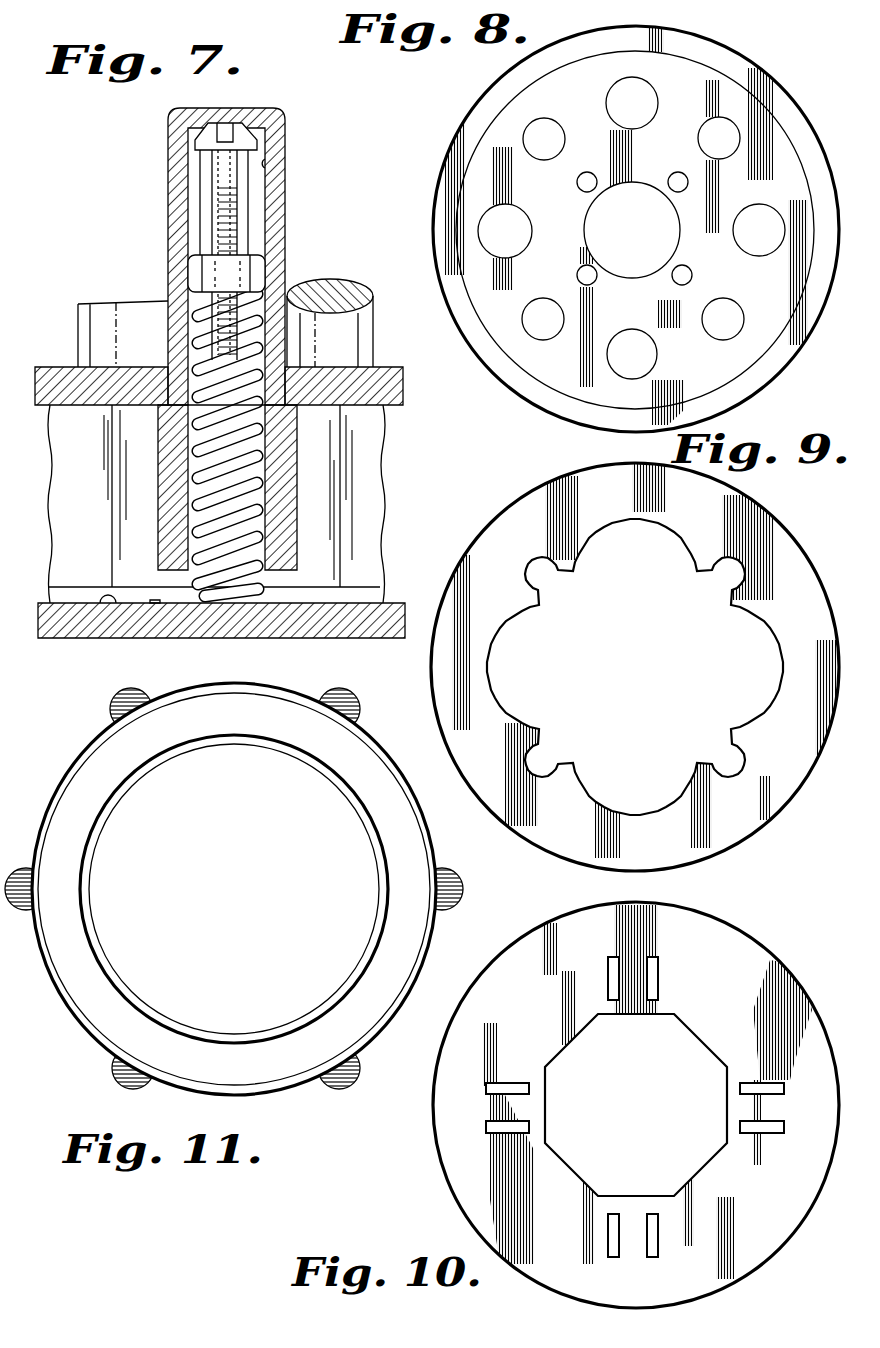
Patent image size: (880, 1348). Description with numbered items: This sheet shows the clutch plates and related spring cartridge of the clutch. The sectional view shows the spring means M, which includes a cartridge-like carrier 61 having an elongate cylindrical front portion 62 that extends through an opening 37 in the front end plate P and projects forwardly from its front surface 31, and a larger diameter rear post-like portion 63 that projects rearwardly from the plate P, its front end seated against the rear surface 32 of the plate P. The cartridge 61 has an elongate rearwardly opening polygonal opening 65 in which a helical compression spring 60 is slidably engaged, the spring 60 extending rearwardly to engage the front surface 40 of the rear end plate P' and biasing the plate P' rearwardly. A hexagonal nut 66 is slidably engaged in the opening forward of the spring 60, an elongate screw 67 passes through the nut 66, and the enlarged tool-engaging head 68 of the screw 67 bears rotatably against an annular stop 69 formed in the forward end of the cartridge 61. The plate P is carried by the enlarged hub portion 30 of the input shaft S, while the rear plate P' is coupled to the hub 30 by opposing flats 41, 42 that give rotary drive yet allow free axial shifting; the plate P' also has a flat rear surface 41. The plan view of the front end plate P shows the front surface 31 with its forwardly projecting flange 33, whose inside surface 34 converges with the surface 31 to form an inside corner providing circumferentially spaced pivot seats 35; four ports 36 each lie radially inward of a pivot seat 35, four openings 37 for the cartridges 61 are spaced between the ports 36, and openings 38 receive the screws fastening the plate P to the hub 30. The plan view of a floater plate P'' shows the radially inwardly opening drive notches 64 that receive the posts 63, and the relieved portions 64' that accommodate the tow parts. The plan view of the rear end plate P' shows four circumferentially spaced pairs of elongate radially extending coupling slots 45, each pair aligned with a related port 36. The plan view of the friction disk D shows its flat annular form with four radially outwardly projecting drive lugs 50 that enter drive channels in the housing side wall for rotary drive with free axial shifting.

In FIG. 7, the hub portion 30 is at (365, 455).
In FIG. 7, the front surface 31 is at (385, 366).
In FIG. 8, the front surface 31 is at (680, 82).
In FIG. 7, the rear surface 32 is at (372, 416).
In FIG. 8, the flange 33 is at (468, 128).
In FIG. 8, the inside surface 34 is at (475, 165).
In FIG. 8, the pivot seats 35 is at (470, 198).
In FIG. 8, the ports 36 is at (617, 97).
In FIG. 8, the openings 37 is at (542, 121).
In FIG. 8, the openings 38 is at (582, 180).
In FIG. 7, the front surface 40 is at (98, 640).
In FIG. 10, the front surface 40 is at (441, 1163).
In FIG. 7, the rear surface / inner flats 41 is at (155, 640).
In FIG. 10, the rear surface / inner flats 41 is at (636, 1197).
In FIG. 7, the flats 42 is at (370, 483).
In FIG. 10, the coupling slots 45 is at (530, 1092).
In FIG. 11, the drive lugs 50 is at (139, 1088).
In FIG. 7, the helical compression springs 60 is at (225, 640).
In FIG. 7, the cartridge-like carriers 61 is at (170, 190).
In FIG. 7, the front portions 62 is at (167, 215).
In FIG. 7, the rear post-like portions 63 is at (157, 463).
In FIG. 9, the drive notches 64 is at (635, 667).
In FIG. 9, the relief 64' is at (719, 643).
In FIG. 7, the polygonal openings 65 is at (264, 164).
In FIG. 7, the nut 66 is at (262, 268).
In FIG. 7, the screw 67 is at (233, 205).
In FIG. 7, the tool-engaging head 68 is at (244, 143).
In FIG. 7, the annular stops 69 is at (207, 124).
In FIG. 7, the spring means M is at (165, 127).
In FIG. 7, the front end plate P is at (425, 391).
In FIG. 8, the front end plate P is at (630, 229).
In FIG. 7, the rear end plate P' is at (216, 641).
In FIG. 10, the rear end plate P' is at (605, 1105).
In FIG. 9, the floater plates P'' is at (635, 667).
In FIG. 7, the rotary input shaft S is at (390, 262).
In FIG. 11, the friction disks D is at (234, 899).